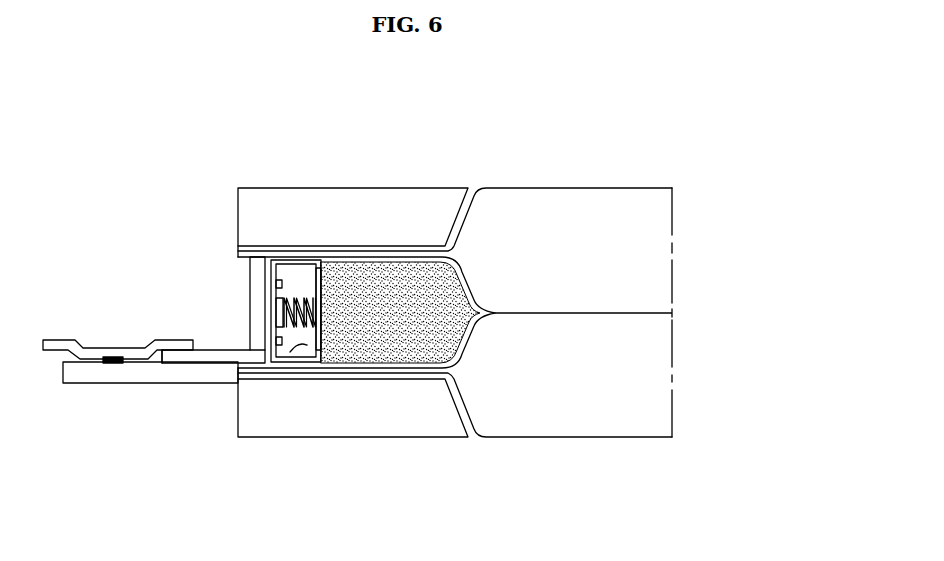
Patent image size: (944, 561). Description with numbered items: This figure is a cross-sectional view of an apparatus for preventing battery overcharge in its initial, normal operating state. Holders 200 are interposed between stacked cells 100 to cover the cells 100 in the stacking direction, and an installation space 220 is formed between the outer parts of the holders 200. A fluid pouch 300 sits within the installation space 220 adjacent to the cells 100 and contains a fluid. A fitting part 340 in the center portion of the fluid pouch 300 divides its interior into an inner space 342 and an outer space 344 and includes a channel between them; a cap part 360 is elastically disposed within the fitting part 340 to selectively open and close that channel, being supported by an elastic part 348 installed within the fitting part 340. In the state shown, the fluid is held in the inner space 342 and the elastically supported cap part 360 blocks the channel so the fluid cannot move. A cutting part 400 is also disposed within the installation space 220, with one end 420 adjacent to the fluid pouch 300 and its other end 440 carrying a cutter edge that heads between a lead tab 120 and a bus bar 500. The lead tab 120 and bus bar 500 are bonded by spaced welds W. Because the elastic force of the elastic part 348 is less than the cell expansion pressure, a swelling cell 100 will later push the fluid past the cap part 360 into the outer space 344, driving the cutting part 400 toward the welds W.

The cell 100 is at (548, 222).
The holder 200 is at (424, 206).
The installation space 220 is at (240, 292).
The fluid pouch 300 is at (409, 331).
The inner space 342 is at (378, 280).
The fitting part 340 is at (305, 265).
The cap part 360 is at (323, 263).
The elastic part 348 is at (286, 292).
The end of cutting part 420 is at (258, 335).
The outer space 344 is at (298, 345).
The cutting part 400 is at (237, 327).
The other end of cutting part 440 is at (173, 356).
The bus bar 500 is at (58, 344).
The lead tab 120 is at (141, 376).
The weld W is at (104, 366).